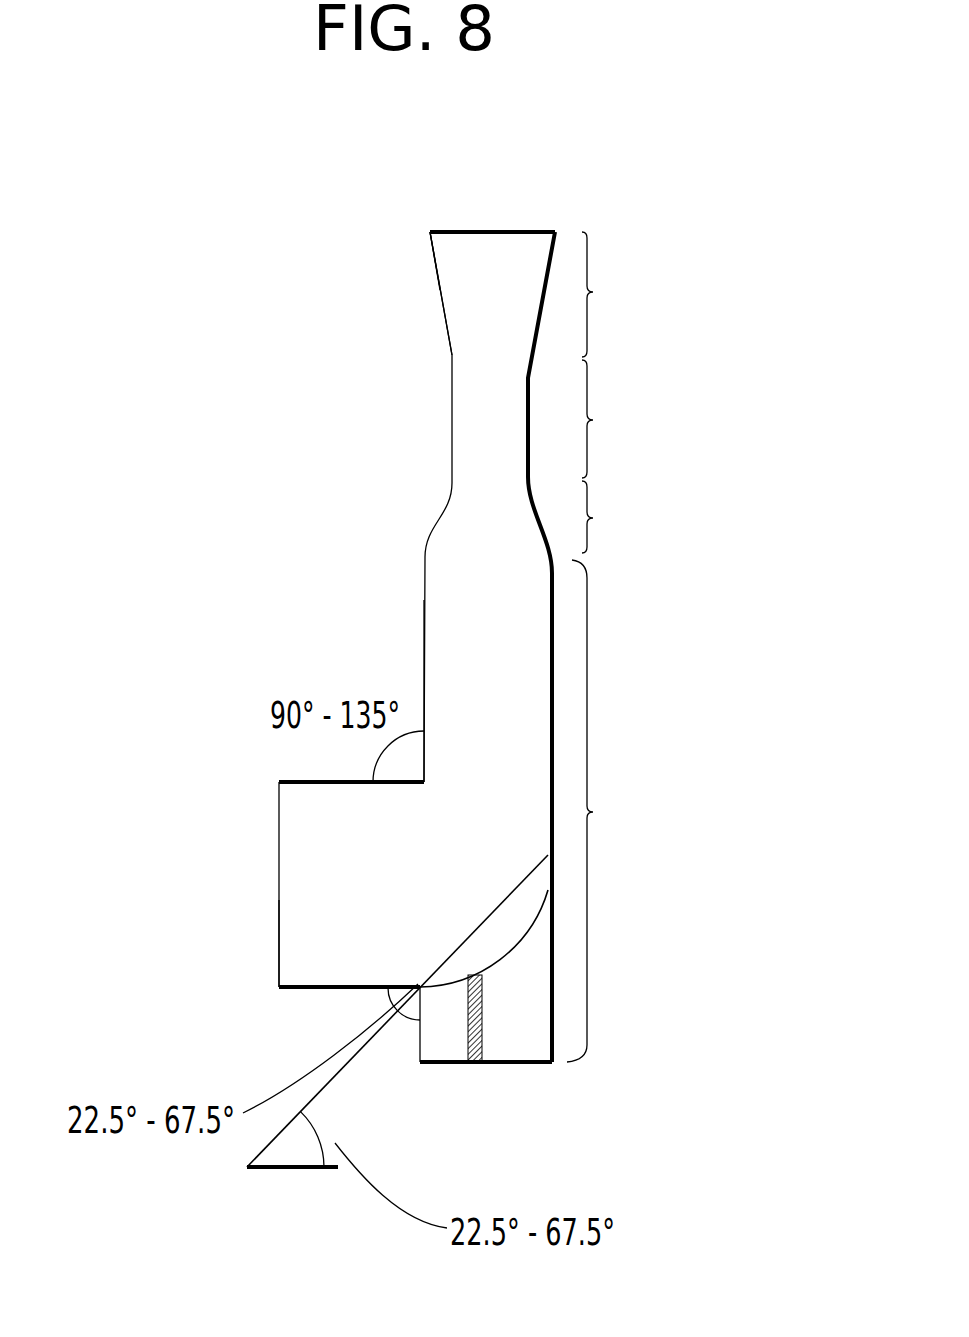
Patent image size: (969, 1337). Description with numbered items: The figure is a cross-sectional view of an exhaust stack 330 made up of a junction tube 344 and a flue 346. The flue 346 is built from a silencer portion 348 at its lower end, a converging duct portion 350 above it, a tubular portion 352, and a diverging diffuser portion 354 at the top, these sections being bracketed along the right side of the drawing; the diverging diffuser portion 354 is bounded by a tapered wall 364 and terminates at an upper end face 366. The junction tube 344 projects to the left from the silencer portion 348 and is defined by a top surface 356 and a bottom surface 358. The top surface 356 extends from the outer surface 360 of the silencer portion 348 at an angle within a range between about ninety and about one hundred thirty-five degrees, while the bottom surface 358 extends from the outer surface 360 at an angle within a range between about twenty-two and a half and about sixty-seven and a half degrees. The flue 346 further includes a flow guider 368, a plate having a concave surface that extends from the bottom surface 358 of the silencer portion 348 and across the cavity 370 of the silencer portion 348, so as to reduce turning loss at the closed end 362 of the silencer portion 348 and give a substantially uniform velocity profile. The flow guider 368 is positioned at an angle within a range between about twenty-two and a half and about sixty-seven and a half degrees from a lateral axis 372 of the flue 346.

The exhaust stack 330 is at (370, 492).
The junction tube 344 is at (280, 987).
The flue 346 is at (413, 224).
The silencer portion 348 is at (614, 811).
The converging duct portion 350 is at (615, 517).
The tubular portion 352 is at (615, 419).
The diverging diffuser portion 354 is at (615, 294).
The top surface 356 is at (318, 782).
The bottom surface 358 is at (360, 987).
The outer surface 360 is at (424, 683).
The closed end 362 is at (497, 1065).
The tapered inlet wall 364 is at (452, 355).
The inlet end face 366 is at (490, 231).
The flow guider 368 is at (500, 958).
The cavity 370 is at (500, 713).
The lateral axis 372 is at (292, 1170).